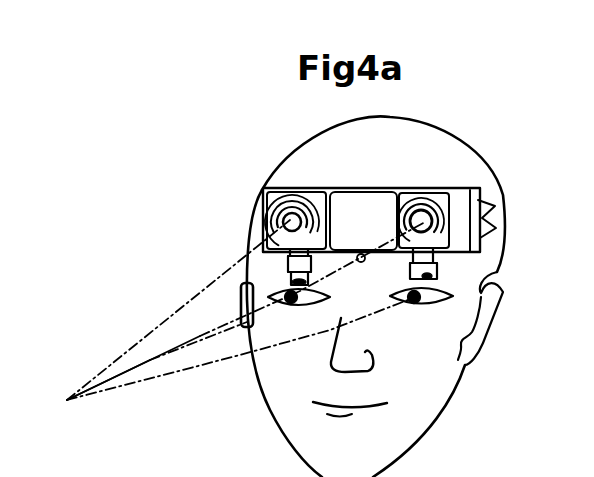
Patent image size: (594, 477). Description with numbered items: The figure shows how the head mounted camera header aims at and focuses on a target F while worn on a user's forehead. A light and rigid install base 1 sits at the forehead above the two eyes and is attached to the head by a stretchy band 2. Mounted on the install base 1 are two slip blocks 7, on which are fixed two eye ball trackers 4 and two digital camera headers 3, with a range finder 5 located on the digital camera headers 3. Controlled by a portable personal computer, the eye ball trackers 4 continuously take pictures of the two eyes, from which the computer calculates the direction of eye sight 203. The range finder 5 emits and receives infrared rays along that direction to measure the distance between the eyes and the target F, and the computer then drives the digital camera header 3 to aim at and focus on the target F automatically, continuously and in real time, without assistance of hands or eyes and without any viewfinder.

The install base 1 is at (468, 193).
The stretchy band 2 is at (497, 220).
The digital camera header 3 is at (291, 216).
The eye ball tracker 4 is at (282, 273).
The range finder 5 is at (424, 200).
The slip block 7 is at (262, 240).
The direction of eye sight 203 is at (207, 342).
The target F is at (240, 328).